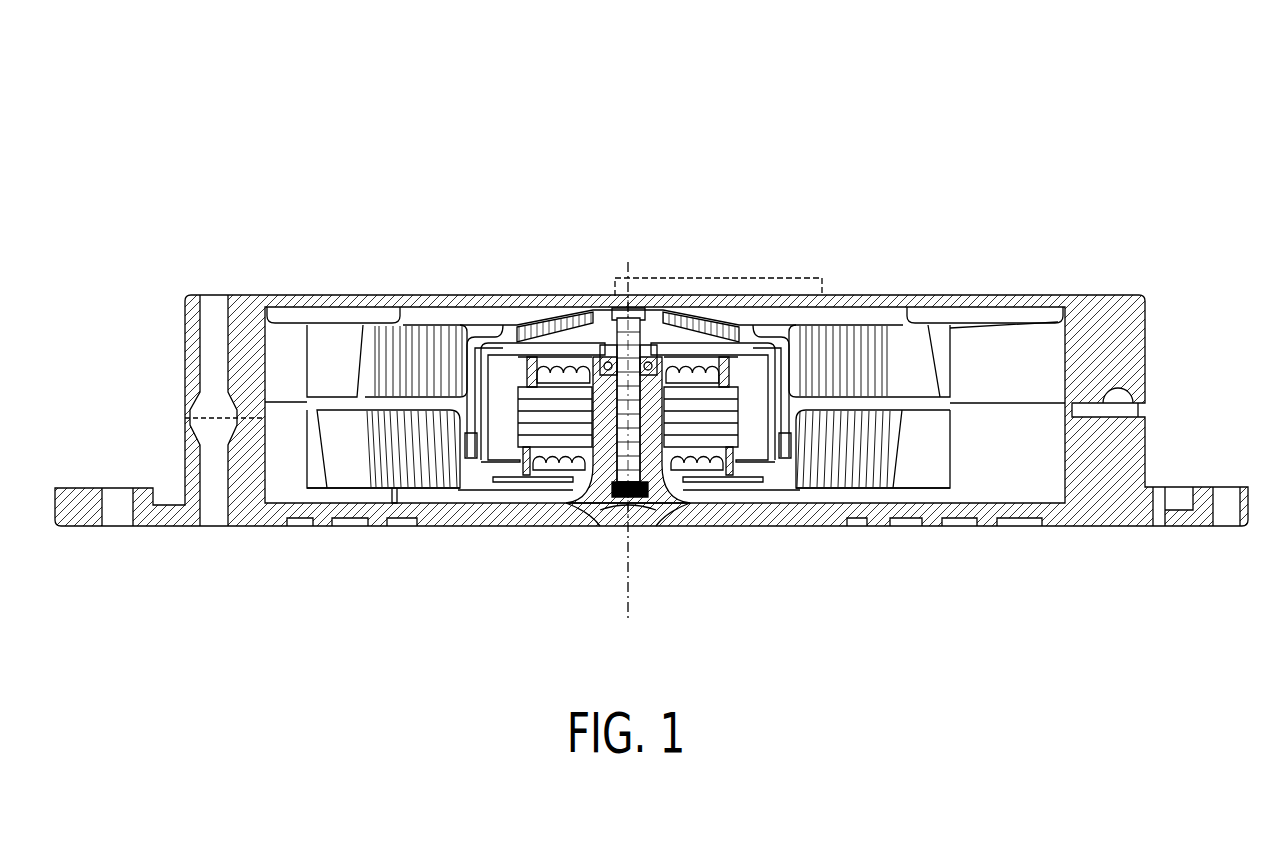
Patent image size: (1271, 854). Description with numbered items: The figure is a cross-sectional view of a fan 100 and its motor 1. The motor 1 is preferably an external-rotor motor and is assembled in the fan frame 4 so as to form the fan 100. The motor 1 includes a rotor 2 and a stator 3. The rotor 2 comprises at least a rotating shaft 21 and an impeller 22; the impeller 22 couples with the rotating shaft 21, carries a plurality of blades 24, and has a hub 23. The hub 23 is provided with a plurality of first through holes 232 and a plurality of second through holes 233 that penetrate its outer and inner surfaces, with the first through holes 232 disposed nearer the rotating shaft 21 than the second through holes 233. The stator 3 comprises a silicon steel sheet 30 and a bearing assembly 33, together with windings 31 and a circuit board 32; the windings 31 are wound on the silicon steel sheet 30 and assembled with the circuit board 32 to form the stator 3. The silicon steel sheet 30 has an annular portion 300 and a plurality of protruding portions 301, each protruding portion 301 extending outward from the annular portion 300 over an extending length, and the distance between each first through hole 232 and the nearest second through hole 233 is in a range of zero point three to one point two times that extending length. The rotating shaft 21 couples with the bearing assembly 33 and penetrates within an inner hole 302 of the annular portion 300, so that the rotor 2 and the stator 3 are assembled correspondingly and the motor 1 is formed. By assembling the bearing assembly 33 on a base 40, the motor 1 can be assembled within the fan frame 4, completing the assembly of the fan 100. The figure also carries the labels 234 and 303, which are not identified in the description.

The fan 100 is at (1141, 80).
The motor 1 is at (512, 150).
The rotor 2 is at (365, 222).
The rotating shaft 21 is at (643, 320).
The impeller 22 is at (415, 345).
The hub 23 is at (455, 345).
The blades 24 is at (380, 340).
The first through holes 232 is at (583, 320).
The second through holes 233 is at (530, 318).
The hub connecting portion 234 is at (567, 318).
The stator 3 is at (688, 608).
The silicon steel sheet 30 is at (698, 417).
The windings 31 is at (698, 467).
The circuit board 32 is at (760, 482).
The bearing assembly 33 is at (633, 350).
The annular portion 300 is at (695, 350).
The protruding portions 301 is at (765, 330).
The inner hole 302 is at (618, 373).
The central axis 303 is at (645, 552).
The fan frame 4 is at (224, 300).
The base 40 is at (590, 473).